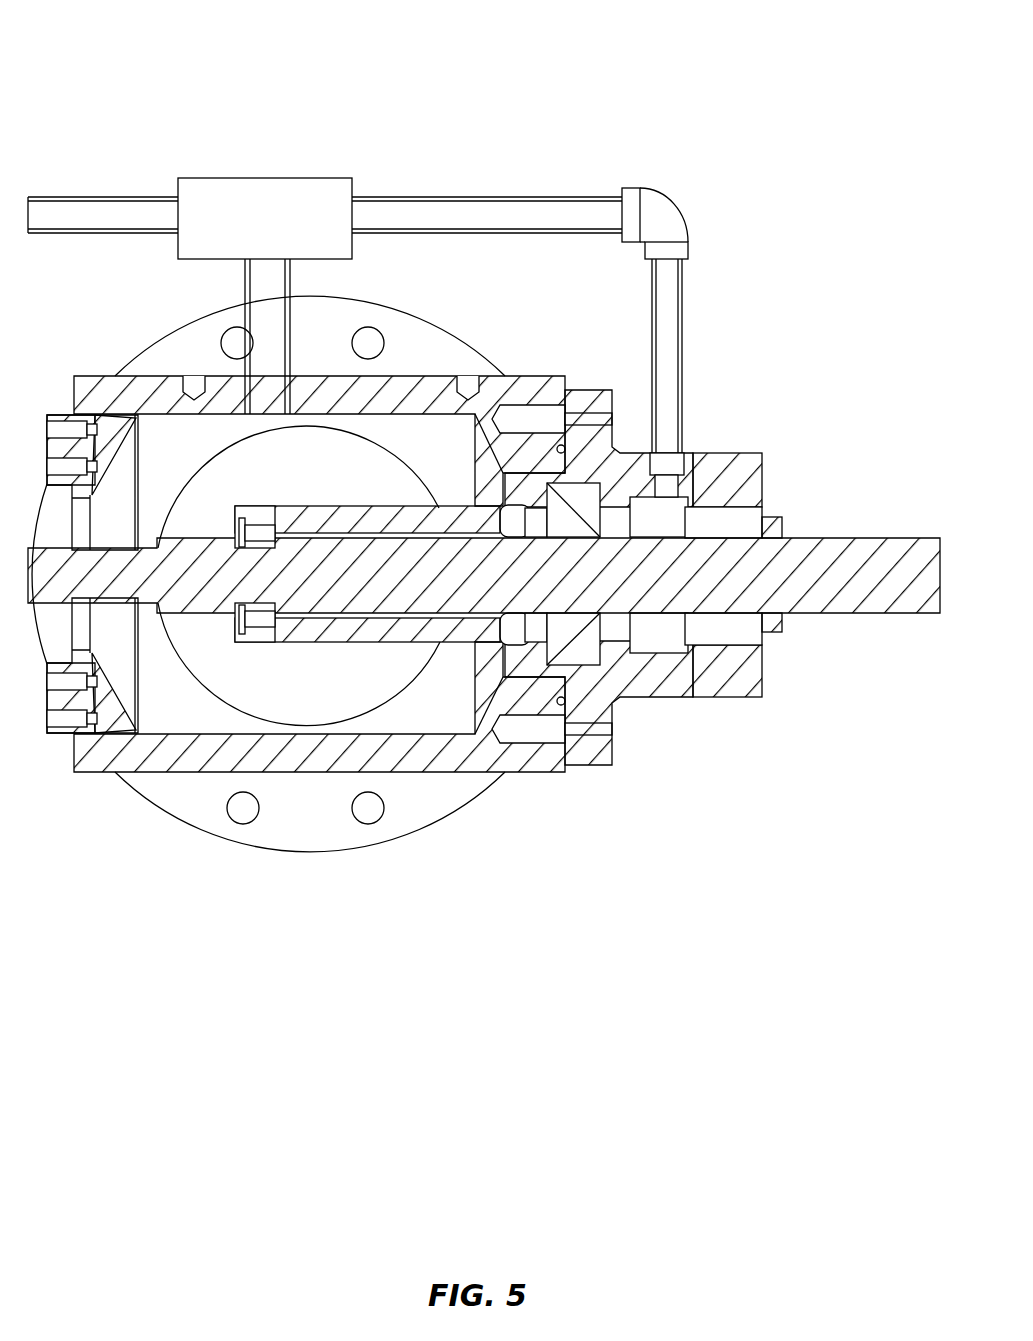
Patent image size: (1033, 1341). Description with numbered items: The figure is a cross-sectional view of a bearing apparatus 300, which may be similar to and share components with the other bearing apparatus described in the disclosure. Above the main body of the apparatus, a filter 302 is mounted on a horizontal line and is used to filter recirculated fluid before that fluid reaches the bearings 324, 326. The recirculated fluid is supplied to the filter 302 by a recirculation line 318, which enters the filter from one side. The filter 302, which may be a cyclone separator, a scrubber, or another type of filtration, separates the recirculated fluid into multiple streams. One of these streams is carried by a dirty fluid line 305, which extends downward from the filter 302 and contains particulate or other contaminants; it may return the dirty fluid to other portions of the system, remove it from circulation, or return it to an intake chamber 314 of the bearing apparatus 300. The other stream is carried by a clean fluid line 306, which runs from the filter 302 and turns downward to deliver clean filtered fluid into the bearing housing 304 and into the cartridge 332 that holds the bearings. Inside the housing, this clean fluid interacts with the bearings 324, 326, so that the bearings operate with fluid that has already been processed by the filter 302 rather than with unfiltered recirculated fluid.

The bearing apparatus 300 is at (482, 461).
The filter 302 is at (272, 178).
The bearing housing 304 is at (207, 752).
The dirty fluid line 305 is at (265, 350).
The clean fluid line 306 is at (487, 197).
The intake chamber 314 is at (417, 447).
The recirculation line 318 is at (138, 197).
The bearing 324 is at (263, 638).
The bearing 326 is at (580, 495).
The cartridge 332 is at (410, 628).